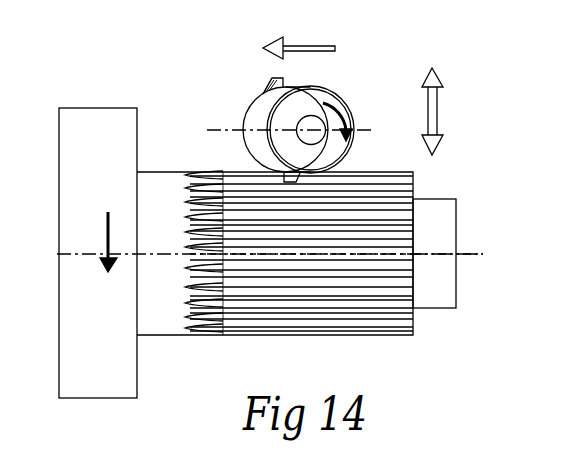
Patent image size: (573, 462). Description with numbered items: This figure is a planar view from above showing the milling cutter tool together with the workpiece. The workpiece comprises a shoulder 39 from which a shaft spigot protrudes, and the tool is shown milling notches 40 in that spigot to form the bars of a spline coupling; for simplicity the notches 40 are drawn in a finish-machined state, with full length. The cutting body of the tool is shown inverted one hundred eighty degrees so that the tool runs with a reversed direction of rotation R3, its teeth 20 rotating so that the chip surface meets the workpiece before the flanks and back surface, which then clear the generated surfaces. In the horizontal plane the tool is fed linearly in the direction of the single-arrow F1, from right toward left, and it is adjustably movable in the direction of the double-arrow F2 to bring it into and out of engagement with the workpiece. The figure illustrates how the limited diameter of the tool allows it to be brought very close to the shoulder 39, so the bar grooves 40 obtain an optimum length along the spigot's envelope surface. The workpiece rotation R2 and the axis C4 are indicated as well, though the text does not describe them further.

The teeth 20 is at (265, 93).
The shoulder 39 is at (138, 138).
The notches 40 is at (247, 317).
The rotation direction R2 is at (92, 242).
The direction of rotation R3 is at (342, 113).
The single-arrow feeding direction F1 is at (299, 34).
The double-arrow adjustment direction F2 is at (449, 111).
The axis C4 is at (468, 253).